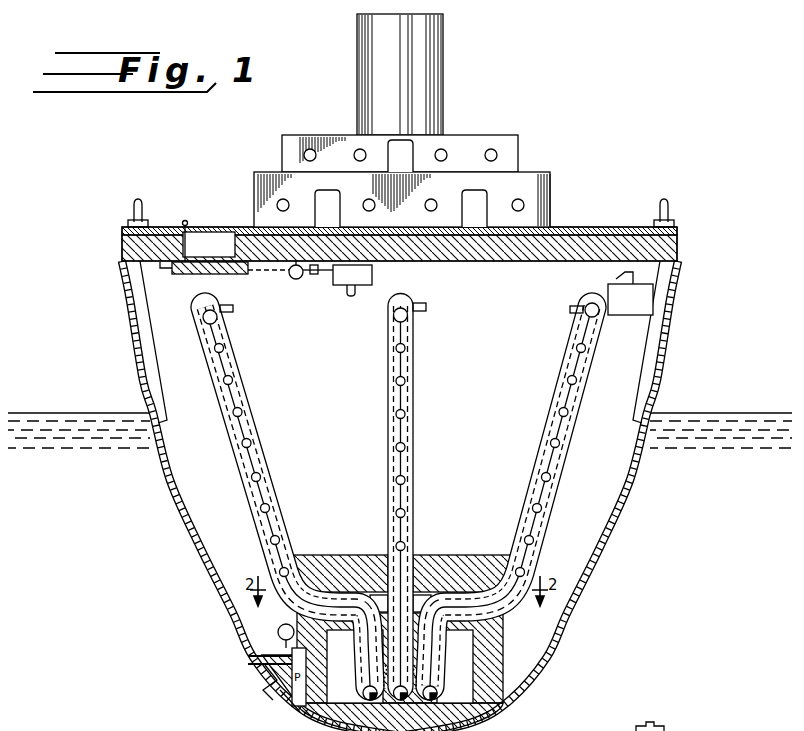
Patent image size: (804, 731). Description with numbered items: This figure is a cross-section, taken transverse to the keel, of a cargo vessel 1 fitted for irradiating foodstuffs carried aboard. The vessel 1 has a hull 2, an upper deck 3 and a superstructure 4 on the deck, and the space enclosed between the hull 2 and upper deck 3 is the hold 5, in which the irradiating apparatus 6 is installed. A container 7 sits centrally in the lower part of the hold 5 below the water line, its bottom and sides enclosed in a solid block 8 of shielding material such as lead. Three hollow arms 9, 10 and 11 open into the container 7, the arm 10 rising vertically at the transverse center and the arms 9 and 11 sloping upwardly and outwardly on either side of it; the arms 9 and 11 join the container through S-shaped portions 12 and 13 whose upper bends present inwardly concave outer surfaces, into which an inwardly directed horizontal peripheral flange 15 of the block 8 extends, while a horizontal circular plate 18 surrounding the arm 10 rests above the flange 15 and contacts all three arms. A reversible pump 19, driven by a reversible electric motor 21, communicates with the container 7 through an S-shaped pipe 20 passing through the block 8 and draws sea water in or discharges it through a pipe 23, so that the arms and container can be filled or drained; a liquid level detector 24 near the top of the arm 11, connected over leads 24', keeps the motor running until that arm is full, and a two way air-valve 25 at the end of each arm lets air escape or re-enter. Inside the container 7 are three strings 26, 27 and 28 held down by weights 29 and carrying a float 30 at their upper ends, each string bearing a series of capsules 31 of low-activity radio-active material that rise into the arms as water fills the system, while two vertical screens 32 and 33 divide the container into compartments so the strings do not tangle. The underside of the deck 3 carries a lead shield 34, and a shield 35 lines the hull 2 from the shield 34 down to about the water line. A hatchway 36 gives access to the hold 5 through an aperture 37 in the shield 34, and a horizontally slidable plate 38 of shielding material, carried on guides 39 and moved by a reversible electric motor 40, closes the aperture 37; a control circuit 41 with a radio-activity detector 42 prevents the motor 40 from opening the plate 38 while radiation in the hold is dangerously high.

The cargo vessel 1 is at (429, 483).
The hull 2 is at (156, 430).
The upper deck 3 is at (399, 233).
The superstructure 4 is at (553, 156).
The hold 5 is at (497, 378).
The apparatus 6 is at (460, 555).
The container 7 is at (447, 680).
The block 8 is at (493, 689).
The arm 9 is at (243, 374).
The arm 10 is at (387, 409).
The arm 11 is at (556, 408).
The S-shaped portion 12 is at (379, 603).
The S-shaped portion 13 is at (422, 603).
The horizontal peripheral flange 15 is at (402, 626).
The horizontal circular plate 18 is at (354, 587).
The reversible pump 19 is at (278, 700).
The S-shaped pipe 20 is at (308, 715).
The reversible electric motor 21 is at (278, 633).
The pipe 23 is at (255, 666).
The liquid level detector 24 is at (615, 297).
The leads 24' is at (615, 271).
The two way air-valve 25 is at (234, 308).
The string 26 is at (268, 486).
The string 27 is at (410, 497).
The string 28 is at (552, 497).
The weights 29 is at (372, 700).
The float 30 is at (203, 321).
The capsules 31 is at (248, 440).
The screen 32 is at (435, 668).
The screen 33 is at (380, 667).
The shield 34 is at (480, 262).
The shield 35 is at (154, 353).
The hatchway 36 is at (210, 222).
The aperture 37 is at (216, 255).
The horizontally slidable plate 38 is at (205, 276).
The guides 39 is at (172, 275).
The reversible electric motor 40 is at (303, 282).
The control circuit 41 is at (373, 274).
The radio-activity detector 42 is at (356, 295).